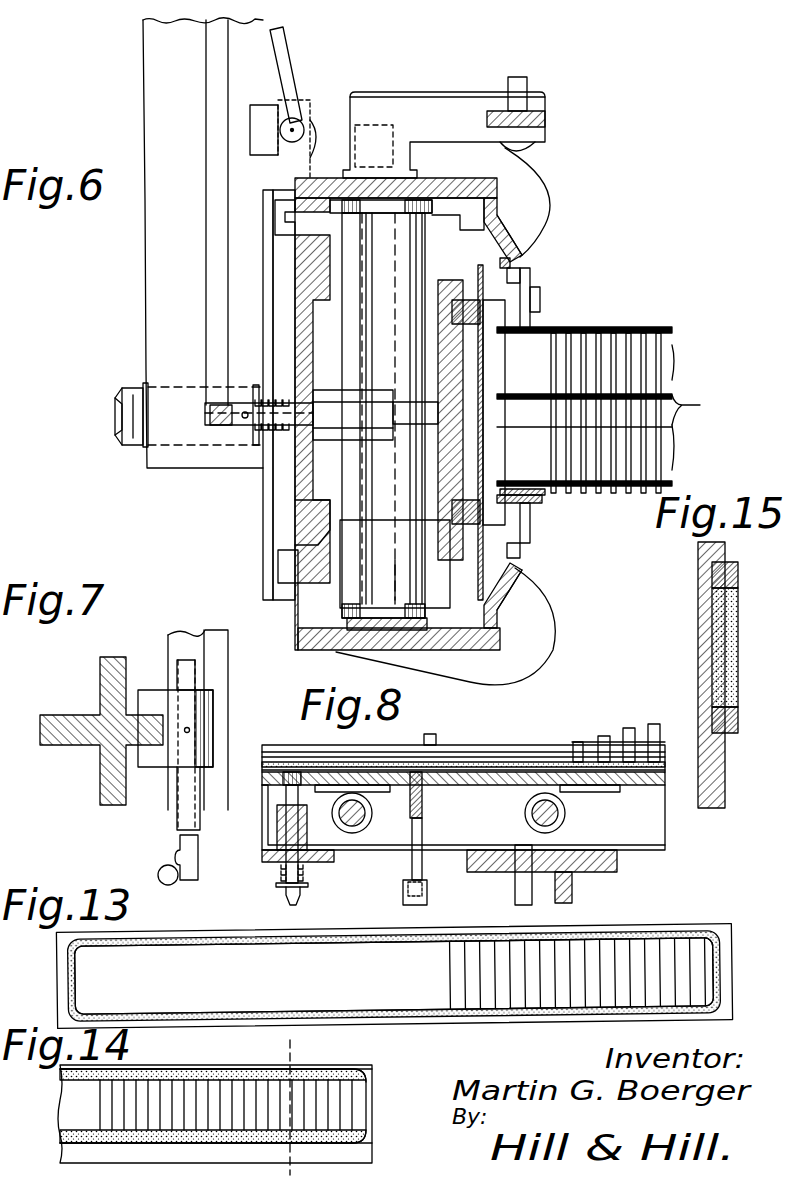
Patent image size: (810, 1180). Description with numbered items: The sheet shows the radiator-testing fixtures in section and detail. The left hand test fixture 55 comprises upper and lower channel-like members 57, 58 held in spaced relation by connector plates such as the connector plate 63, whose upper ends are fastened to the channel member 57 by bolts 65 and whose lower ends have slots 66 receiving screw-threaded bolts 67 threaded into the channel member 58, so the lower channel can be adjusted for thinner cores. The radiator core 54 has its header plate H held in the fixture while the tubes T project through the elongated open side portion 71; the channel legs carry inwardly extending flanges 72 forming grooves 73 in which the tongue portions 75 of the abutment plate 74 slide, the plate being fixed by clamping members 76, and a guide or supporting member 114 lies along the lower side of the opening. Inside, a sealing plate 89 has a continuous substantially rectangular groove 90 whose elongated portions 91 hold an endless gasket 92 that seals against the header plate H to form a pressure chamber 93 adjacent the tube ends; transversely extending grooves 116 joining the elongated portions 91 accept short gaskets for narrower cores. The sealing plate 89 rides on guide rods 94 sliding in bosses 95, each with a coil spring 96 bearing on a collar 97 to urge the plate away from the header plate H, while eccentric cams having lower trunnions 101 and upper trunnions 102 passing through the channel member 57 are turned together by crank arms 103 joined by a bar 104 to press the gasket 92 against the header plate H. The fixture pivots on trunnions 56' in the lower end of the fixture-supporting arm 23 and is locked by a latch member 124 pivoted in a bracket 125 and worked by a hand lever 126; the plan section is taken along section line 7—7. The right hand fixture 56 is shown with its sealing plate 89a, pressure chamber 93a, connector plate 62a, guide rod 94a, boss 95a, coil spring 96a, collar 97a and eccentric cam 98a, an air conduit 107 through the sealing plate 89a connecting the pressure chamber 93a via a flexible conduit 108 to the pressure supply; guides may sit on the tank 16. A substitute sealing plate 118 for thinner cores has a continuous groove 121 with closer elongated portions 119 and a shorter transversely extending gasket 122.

In FIG. 6, the section line 7— 7 is at (115, 76).
In FIG. 6, the tank 16 is at (532, 530).
In FIG. 6, the fixture-supporting arm 23 is at (152, 260).
In FIG. 7, the fixture-supporting arm 23 is at (108, 705).
In FIG. 6, the radiator core 54 is at (648, 325).
In FIG. 8, the radiator core 54 is at (660, 716).
In FIG. 6, the left hand test fixture 55 is at (272, 505).
In FIG. 6, the right hand test fixture 56 is at (181, 429).
In FIG. 8, the right hand test fixture 56 is at (463, 833).
In FIG. 8, the trunnions 56' is at (501, 875).
In FIG. 6, the upper channel-like member 57 is at (508, 193).
In FIG. 7, the upper channel-like member 57 is at (228, 673).
In FIG. 6, the lower channel-like member 58 is at (512, 649).
In FIG. 8, the mounting block 62a is at (580, 878).
In FIG. 6, the connector plate 63 is at (280, 490).
In FIG. 6, the bolts 65 is at (275, 232).
In FIG. 6, the slots 66 is at (295, 540).
In FIG. 6, the screw-threaded bolts 67 is at (278, 578).
In FIG. 6, the open side portion 71 is at (540, 300).
In FIG. 6, the inwardly extending flanges 72 is at (520, 272).
In FIG. 6, the grooves 73 is at (505, 245).
In FIG. 6, the abutment plate 74 is at (540, 500).
In FIG. 6, the tongue portions 75 is at (512, 260).
In FIG. 6, the clamping members 76 is at (530, 285).
In FIG. 6, the sealing plate 89 is at (447, 270).
In FIG. 13, the sealing plate 89 is at (714, 922).
In FIG. 8, the sealing plate 89a is at (487, 787).
In FIG. 13, the continuous substantially rectangular groove 90 is at (712, 998).
In FIG. 13, the elongated portions 91 is at (458, 942).
In FIG. 6, the endless gasket 92 is at (465, 300).
In FIG. 13, the endless gasket 92 is at (718, 945).
In FIG. 6, the pressure chamber 93 is at (470, 425).
In FIG. 8, the pressure chamber 93a is at (447, 788).
In FIG. 6, the supporting guide rods 94 is at (412, 405).
In FIG. 8, the shaft 94a is at (286, 800).
In FIG. 6, the bosses 95 is at (340, 440).
In FIG. 8, the sleeve 95a is at (277, 830).
In FIG. 6, the coil spring 96 is at (255, 440).
In FIG. 8, the spring 96a is at (280, 870).
In FIG. 6, the collars or washers 97 is at (256, 385).
In FIG. 8, the pin 97a is at (282, 887).
In FIG. 8, the roller 98a is at (365, 812).
In FIG. 6, the trunnions 101 is at (395, 565).
In FIG. 6, the trunnions 102 is at (393, 125).
In FIG. 6, the crank arms 103 is at (470, 95).
In FIG. 6, the bar 104 is at (545, 118).
In FIG. 8, the air conduit 107 is at (421, 830).
In FIG. 8, the flexible conduit 108 is at (403, 898).
In FIG. 6, the guide or supporting member 114 is at (560, 500).
In FIG. 13, the transversely extending grooves 116 is at (618, 1035).
In FIG. 15, the sealing plate 118 is at (725, 768).
In FIG. 14, the sealing plate 118 is at (375, 1120).
In FIG. 15, the elongated portions 119 is at (712, 570).
In FIG. 14, the elongated portions 119 is at (205, 1056).
In FIG. 14, the continuous groove 121 is at (366, 1105).
In FIG. 15, the transversely extending gasket 122 is at (735, 640).
In FIG. 14, the transversely extending gasket 122 is at (290, 1132).
In FIG. 6, the latch member 124 is at (258, 132).
In FIG. 7, the latch member 124 is at (185, 770).
In FIG. 6, the bracket 125 is at (300, 165).
In FIG. 7, the bracket 125 is at (170, 675).
In FIG. 6, the hand lever 126 is at (290, 48).
In FIG. 7, the hand lever 126 is at (172, 885).
In FIG. 6, the header plate H is at (478, 545).
In FIG. 8, the header plate H is at (592, 786).
In FIG. 6, the tubes T is at (692, 410).
In FIG. 8, the tubes T is at (628, 728).